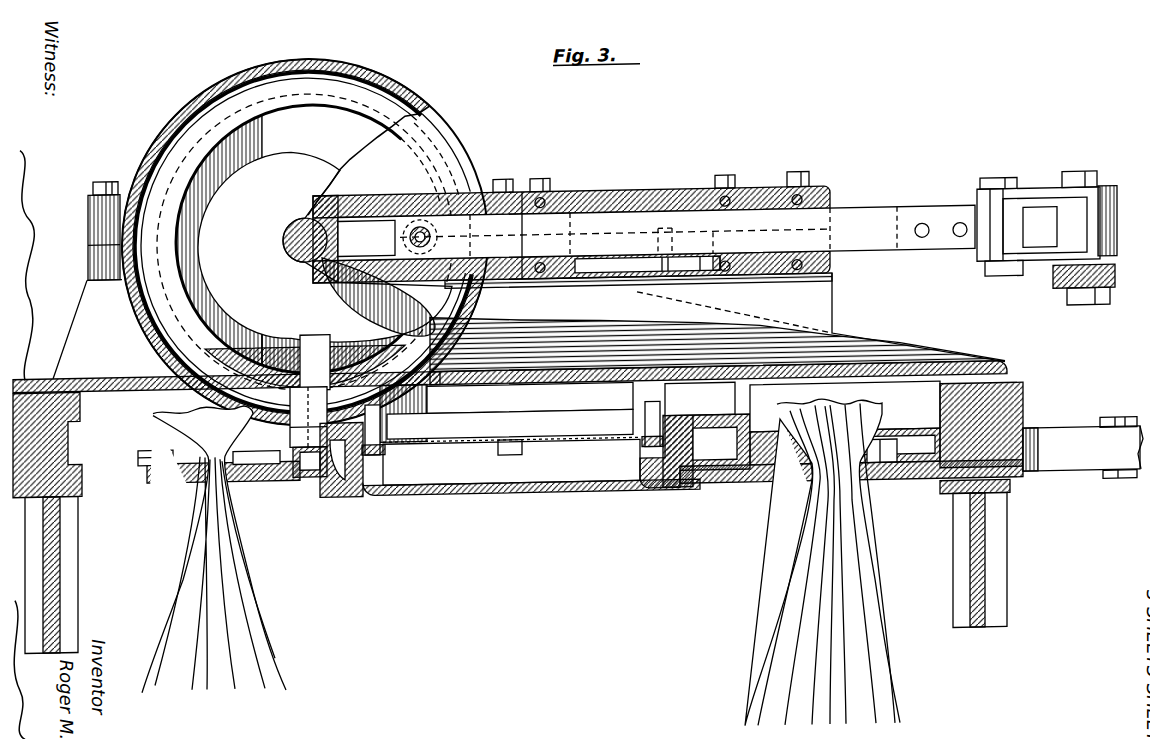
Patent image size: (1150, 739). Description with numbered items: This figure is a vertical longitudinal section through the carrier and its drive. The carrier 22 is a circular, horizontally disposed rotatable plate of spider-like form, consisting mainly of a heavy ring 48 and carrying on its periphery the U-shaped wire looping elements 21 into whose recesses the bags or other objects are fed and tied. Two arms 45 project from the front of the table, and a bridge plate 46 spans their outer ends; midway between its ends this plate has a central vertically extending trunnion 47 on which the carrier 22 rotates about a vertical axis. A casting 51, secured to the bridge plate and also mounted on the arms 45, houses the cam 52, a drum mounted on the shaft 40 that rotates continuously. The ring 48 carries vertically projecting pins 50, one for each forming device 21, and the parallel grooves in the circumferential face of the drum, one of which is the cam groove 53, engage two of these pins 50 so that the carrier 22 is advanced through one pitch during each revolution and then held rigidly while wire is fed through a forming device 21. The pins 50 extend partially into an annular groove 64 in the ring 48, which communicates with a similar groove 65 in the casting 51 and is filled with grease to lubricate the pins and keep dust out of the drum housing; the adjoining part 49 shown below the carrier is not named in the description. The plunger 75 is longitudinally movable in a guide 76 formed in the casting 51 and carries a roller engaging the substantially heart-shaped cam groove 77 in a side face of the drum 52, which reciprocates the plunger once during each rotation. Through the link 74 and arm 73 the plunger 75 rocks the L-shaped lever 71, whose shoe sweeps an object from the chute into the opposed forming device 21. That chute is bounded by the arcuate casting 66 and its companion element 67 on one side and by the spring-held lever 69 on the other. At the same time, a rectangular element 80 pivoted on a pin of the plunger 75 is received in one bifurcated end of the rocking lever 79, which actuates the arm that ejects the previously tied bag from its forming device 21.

The wire looping elements 21 is at (153, 450).
The carrier 22 is at (683, 470).
The shaft 40 is at (290, 228).
The arms 45 is at (62, 592).
The bridge plate 46 is at (333, 483).
The trunnion 47 is at (538, 483).
The heavy ring 48 is at (380, 474).
The bracket plate 49 is at (277, 481).
The pins 50 is at (280, 433).
The casting 51 is at (815, 316).
The cam 52 is at (370, 98).
The cam groove 53 is at (237, 348).
The annular groove 64 is at (380, 458).
The groove 65 is at (710, 398).
The arcuate casting 66 is at (895, 478).
The companion element 67 is at (1075, 455).
The lever 69 is at (903, 430).
The L-shaped lever 71 is at (1113, 416).
The arm 73 is at (1060, 275).
The link 74 is at (1032, 197).
The plunger 75 is at (582, 232).
The guide 76 is at (663, 205).
The cam groove 77 is at (306, 245).
The rocking lever 79 is at (700, 277).
The rectangular element 80 is at (675, 275).